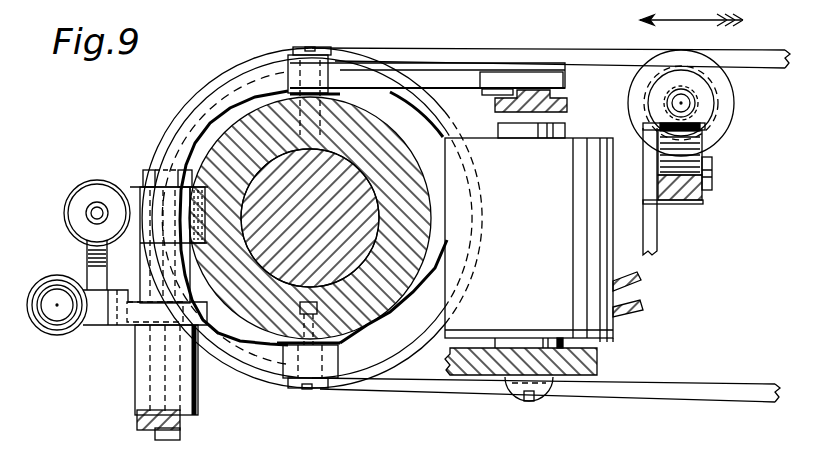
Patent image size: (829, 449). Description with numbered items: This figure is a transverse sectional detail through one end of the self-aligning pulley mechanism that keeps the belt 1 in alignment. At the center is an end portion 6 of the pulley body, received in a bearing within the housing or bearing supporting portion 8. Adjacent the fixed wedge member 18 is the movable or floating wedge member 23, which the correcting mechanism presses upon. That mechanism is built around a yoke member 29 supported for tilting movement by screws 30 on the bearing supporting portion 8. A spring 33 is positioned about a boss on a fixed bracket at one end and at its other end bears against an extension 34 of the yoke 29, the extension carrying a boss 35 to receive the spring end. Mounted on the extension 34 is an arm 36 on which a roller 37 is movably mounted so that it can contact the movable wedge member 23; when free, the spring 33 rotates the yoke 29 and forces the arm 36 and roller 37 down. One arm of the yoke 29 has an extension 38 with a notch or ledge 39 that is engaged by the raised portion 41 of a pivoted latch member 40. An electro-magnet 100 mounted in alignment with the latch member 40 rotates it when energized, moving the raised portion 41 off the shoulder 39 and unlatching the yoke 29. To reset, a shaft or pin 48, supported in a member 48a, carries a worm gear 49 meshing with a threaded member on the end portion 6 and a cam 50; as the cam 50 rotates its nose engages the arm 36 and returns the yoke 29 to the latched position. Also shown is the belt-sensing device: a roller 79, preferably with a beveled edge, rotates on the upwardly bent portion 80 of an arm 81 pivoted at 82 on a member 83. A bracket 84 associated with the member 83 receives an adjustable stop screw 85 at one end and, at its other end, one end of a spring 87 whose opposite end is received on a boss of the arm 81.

The belt 1 is at (762, 57).
The end portion 6 is at (347, 172).
The bearing supporting portion 8 is at (380, 164).
The wedge member 18 is at (380, 349).
The movable wedge member 23 is at (410, 352).
The yoke member 29 is at (219, 92).
The screw 30 is at (318, 47).
The spring 33 is at (47, 290).
The extension 34 is at (100, 323).
The boss 35 is at (60, 313).
The arm 36 is at (100, 258).
The roller 37 is at (77, 193).
The extension 38 is at (437, 82).
The notch 39 is at (488, 95).
The latch member 40 is at (569, 106).
The raised portion 41 is at (566, 91).
The shaft 48 is at (147, 173).
The member 48a is at (143, 388).
The worm gear 49 is at (133, 188).
The cam 50 is at (137, 316).
The roller 79 is at (722, 103).
The upwardly bent portion 80 is at (700, 113).
The arm 81 is at (690, 202).
The pivot 82 is at (713, 183).
The member 83 is at (657, 240).
The bracket 84 is at (704, 133).
The adjustable stop screw 85 is at (650, 128).
The spring 87 is at (712, 166).
The electro-magnet 100 is at (643, 297).